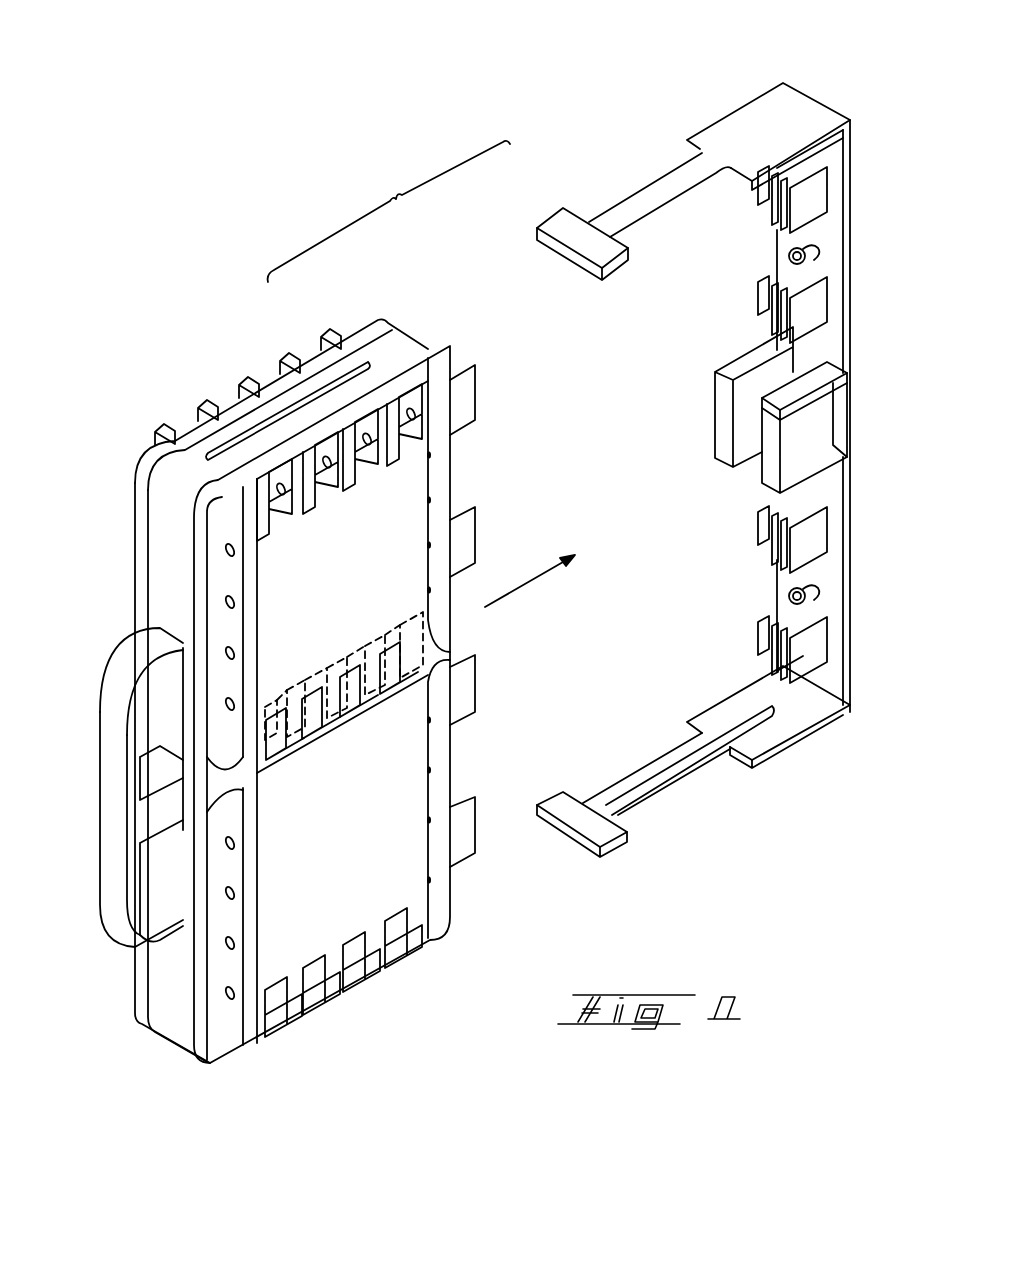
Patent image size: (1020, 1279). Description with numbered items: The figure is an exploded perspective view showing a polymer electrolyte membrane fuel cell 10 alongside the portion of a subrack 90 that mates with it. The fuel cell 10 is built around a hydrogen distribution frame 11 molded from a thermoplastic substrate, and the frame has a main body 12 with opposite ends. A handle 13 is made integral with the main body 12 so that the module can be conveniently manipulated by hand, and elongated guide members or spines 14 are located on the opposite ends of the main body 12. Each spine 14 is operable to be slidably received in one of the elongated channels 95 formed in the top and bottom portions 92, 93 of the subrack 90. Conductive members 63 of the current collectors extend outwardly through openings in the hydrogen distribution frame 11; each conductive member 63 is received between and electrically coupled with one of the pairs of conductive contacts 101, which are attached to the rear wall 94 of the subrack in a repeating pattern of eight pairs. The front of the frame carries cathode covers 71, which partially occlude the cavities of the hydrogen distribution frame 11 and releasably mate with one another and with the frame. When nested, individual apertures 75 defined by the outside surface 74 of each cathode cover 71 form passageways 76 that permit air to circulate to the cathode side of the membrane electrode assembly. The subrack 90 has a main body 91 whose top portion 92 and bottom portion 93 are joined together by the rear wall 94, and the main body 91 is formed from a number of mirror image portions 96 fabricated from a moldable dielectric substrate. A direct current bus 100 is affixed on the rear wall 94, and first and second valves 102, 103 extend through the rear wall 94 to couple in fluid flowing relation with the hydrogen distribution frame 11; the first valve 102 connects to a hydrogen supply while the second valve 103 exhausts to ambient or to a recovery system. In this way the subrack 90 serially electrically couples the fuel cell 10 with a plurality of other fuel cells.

The PEM fuel cell 10 is at (163, 549).
The hydrogen distribution frame 11 is at (385, 358).
The main body 12 is at (166, 597).
The handle 13 is at (100, 768).
The spines 14 is at (322, 385).
The conductive member 63 is at (462, 525).
The cathode cover 71 is at (338, 588).
The outside surface 74 is at (388, 590).
The apertures 75 is at (400, 455).
The passageways 76 is at (402, 662).
The subrack 90 is at (842, 83).
The main body 91 is at (872, 522).
The top portion 92 is at (755, 120).
The bottom portion 93 is at (715, 712).
The rear wall 94 is at (828, 575).
The elongated channels 95 is at (560, 243).
The mirror image portions 96 is at (828, 222).
The DC bus 100 is at (805, 318).
The conductive contacts 101 is at (805, 208).
The first valve 102 is at (790, 256).
The second valve 103 is at (790, 596).